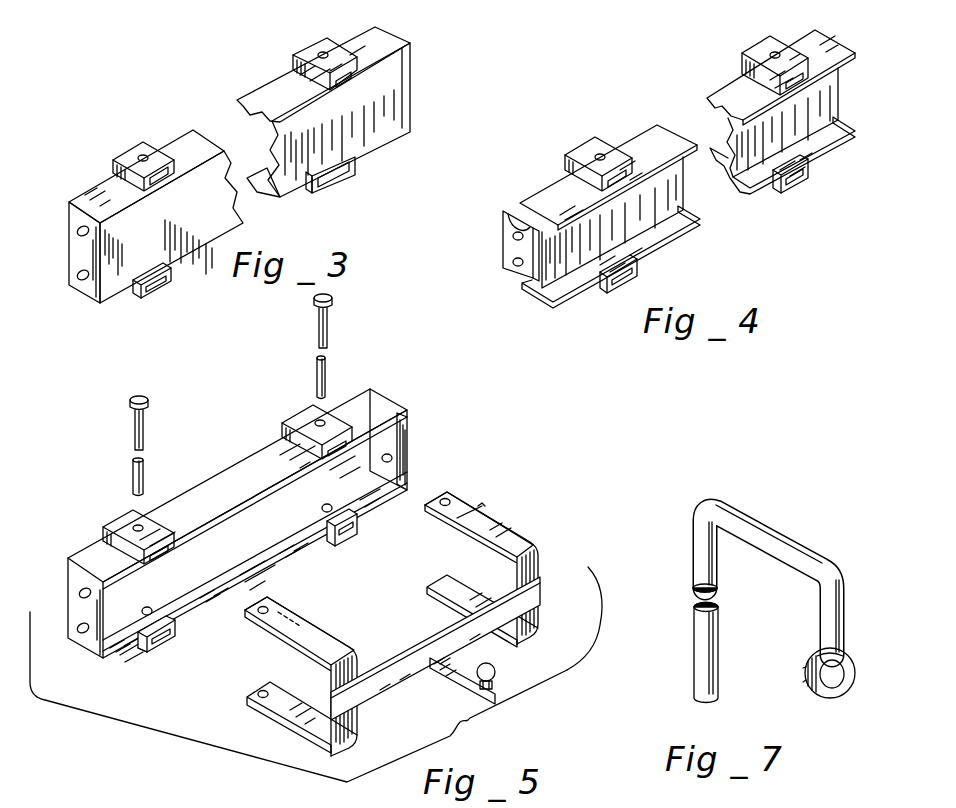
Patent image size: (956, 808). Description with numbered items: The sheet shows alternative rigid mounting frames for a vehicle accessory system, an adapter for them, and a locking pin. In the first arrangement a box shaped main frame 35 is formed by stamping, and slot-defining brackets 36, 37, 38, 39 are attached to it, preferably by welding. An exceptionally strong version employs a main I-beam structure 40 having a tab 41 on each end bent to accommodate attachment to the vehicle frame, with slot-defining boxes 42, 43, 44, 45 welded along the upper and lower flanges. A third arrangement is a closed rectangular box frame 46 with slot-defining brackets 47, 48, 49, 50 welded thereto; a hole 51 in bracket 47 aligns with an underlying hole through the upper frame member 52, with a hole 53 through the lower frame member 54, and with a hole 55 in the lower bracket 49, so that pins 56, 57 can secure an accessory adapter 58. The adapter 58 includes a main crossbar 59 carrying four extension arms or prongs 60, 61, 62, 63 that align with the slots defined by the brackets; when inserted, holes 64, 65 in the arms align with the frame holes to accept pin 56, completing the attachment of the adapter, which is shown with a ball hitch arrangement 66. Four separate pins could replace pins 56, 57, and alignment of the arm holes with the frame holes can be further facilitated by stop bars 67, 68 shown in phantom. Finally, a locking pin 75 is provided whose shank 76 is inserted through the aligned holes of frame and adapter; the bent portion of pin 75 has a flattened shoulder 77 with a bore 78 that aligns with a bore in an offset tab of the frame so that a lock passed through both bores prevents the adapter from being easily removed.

In FIG. 3, the main frame 35 is at (411, 89).
In FIG. 3, the bracket 36 is at (122, 157).
In FIG. 3, the bracket 37 is at (304, 55).
In FIG. 3, the bracket 38 is at (157, 292).
In FIG. 3, the bracket 39 is at (356, 176).
In FIG. 4, the main I-beam structure 40 is at (680, 200).
In FIG. 4, the tab 41 is at (510, 247).
In FIG. 4, the slot-defining box 42 is at (578, 146).
In FIG. 4, the slot-defining box 43 is at (757, 50).
In FIG. 4, the slot-defining box 44 is at (637, 270).
In FIG. 4, the slot-defining box 45 is at (808, 180).
In FIG. 5, the closed rectangular box frame 46 is at (253, 516).
In FIG. 5, the slot-defining bracket 47 is at (118, 522).
In FIG. 5, the slot-defining bracket 48 is at (297, 418).
In FIG. 5, the lower bracket 49 is at (139, 649).
In FIG. 5, the slot-defining bracket 50 is at (315, 542).
In FIG. 5, the hole 51 is at (140, 523).
In FIG. 5, the upper frame member 52 is at (247, 467).
In FIG. 5, the hole 53 is at (150, 612).
In FIG. 5, the lower frame member 54 is at (260, 562).
In FIG. 5, the hole 55 is at (157, 644).
In FIG. 5, the pin 56 is at (148, 433).
In FIG. 5, the pin 57 is at (330, 322).
In FIG. 5, the accessory adapter 58 is at (467, 561).
In FIG. 5, the main crossbar 59 is at (418, 650).
In FIG. 5, the extension arm 60 is at (285, 673).
In FIG. 5, the extension arm 61 is at (453, 493).
In FIG. 5, the extension arm 62 is at (273, 720).
In FIG. 5, the extension arm 63 is at (428, 588).
In FIG. 5, the hole 64 is at (263, 613).
In FIG. 5, the hole 65 is at (245, 679).
In FIG. 5, the ball hitch arrangement 66 is at (463, 675).
In FIG. 5, the stop bar 67 is at (297, 610).
In FIG. 5, the stop bar 68 is at (453, 532).
In FIG. 7, the pin 75 is at (758, 523).
In FIG. 7, the shank 76 is at (698, 658).
In FIG. 7, the flattened shoulder 77 is at (815, 667).
In FIG. 7, the bore 78 is at (807, 683).